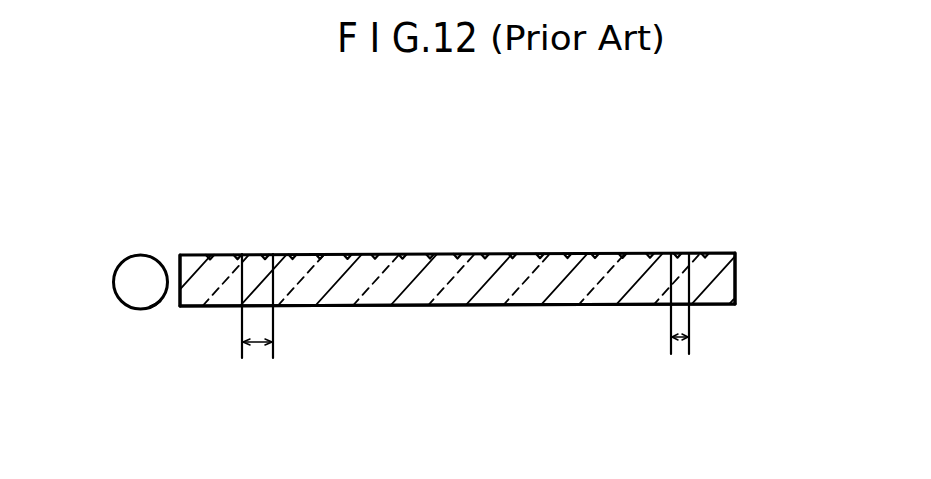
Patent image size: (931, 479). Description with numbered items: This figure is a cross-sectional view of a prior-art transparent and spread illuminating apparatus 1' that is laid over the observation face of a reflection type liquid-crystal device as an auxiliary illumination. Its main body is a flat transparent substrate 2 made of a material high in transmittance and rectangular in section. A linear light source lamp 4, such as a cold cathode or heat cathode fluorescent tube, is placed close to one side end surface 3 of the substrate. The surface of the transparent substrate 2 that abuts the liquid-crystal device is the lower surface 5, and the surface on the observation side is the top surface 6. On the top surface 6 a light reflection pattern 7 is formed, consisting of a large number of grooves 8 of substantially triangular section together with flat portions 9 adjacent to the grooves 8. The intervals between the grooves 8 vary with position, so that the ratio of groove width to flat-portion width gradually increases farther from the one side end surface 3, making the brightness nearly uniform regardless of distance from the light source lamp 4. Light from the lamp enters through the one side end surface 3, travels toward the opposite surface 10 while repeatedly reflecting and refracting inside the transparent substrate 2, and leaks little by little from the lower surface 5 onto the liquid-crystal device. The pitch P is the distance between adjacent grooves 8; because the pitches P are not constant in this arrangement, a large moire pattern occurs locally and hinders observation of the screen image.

The transparent and spread illuminating apparatus 1' is at (457, 209).
The transparent substrate 2 is at (460, 292).
The one side end surface 3 is at (167, 303).
The light source lamp 4 is at (142, 273).
The lower surface 5 is at (572, 305).
The top surface 6 is at (375, 255).
The light reflection pattern 7 is at (561, 253).
The grooves 8 is at (207, 258).
The flat portions 9 is at (502, 255).
The opposite surface 10 is at (735, 277).
The pitch P is at (258, 346).